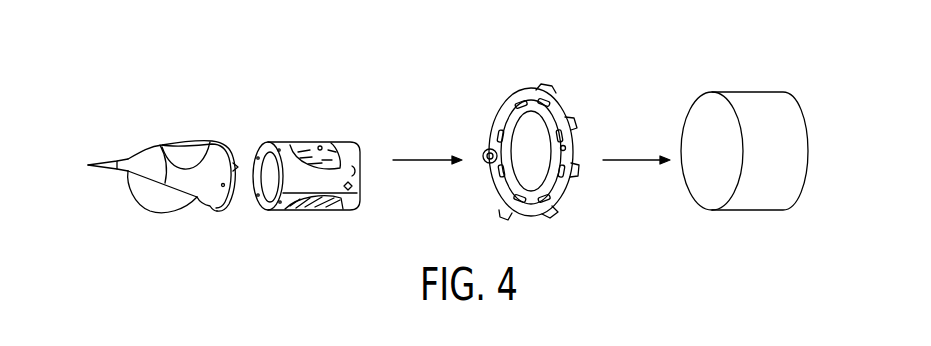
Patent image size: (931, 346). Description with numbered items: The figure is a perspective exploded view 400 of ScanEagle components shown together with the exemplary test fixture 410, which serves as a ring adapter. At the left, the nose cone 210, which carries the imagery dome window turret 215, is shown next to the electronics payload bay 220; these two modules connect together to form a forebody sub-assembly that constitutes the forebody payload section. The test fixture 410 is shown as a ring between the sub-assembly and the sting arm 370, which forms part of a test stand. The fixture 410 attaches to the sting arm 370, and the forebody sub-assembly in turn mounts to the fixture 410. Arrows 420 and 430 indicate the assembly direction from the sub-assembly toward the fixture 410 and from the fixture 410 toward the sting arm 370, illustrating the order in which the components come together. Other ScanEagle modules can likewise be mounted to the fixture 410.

The perspective exploded view 400 is at (118, 122).
The nose cone 210 is at (207, 142).
The imagery dome window turret 215 is at (140, 207).
The electronics payload bay 220 is at (312, 142).
The test fixture 410 is at (503, 122).
The assembly step arrow 420 is at (433, 163).
The assembly step arrow 430 is at (635, 165).
The sting arm 370 is at (693, 103).